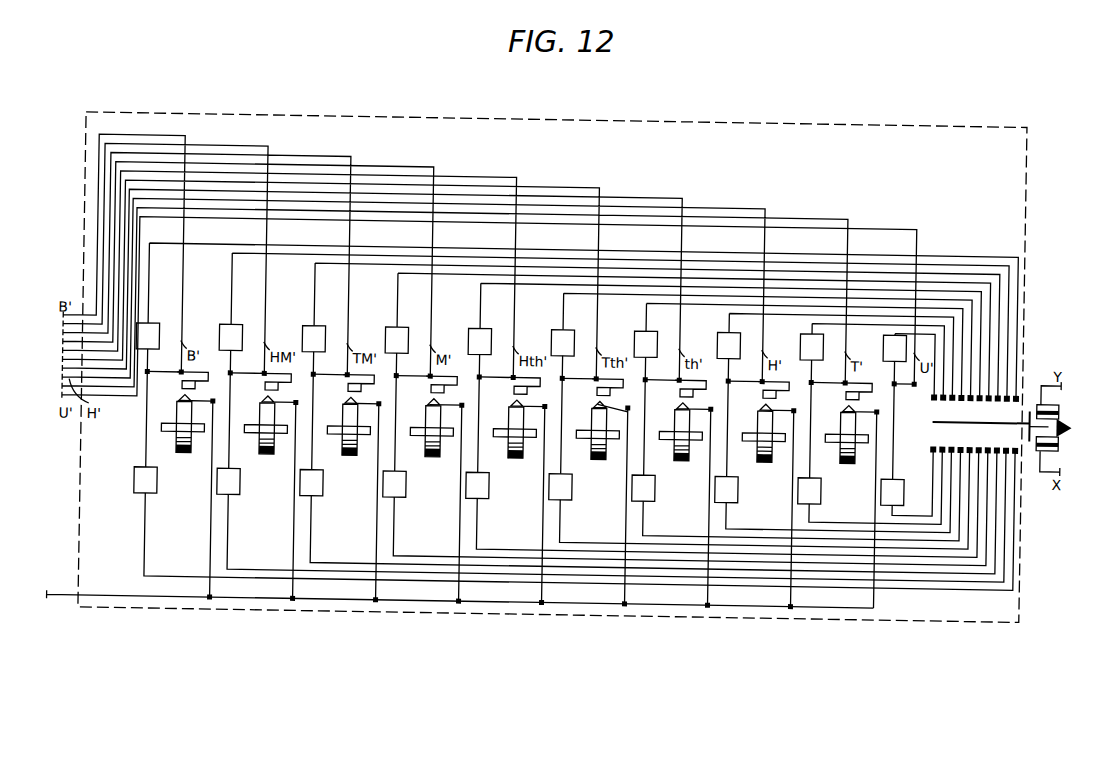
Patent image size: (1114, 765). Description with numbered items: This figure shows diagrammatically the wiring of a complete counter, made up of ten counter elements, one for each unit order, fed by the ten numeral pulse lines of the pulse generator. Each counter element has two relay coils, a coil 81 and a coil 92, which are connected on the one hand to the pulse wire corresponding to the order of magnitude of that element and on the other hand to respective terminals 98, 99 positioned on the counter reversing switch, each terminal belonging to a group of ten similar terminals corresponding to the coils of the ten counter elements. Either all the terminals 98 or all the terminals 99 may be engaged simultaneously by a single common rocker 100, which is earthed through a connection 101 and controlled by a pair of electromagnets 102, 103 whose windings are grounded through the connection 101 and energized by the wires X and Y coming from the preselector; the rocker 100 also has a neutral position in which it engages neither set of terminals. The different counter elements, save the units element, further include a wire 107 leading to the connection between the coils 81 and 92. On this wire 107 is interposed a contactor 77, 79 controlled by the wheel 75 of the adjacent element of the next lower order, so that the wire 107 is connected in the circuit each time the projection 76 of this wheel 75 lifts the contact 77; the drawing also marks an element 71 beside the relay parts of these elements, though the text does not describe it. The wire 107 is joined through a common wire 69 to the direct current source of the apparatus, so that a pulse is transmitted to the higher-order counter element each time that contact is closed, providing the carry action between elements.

The common wire 69 is at (761, 597).
The armature 71 is at (623, 437).
The wheel 75 is at (600, 458).
The projection 76 is at (592, 431).
The contact 77 is at (844, 399).
The contactor 79 is at (845, 388).
The coil 81 is at (519, 486).
The coil 92 is at (521, 342).
The terminals 98 is at (981, 436).
The terminals 99 is at (970, 389).
The rocker 100 is at (967, 430).
The connection 101 is at (1066, 420).
The electromagnet 102 is at (1049, 437).
The electromagnet 103 is at (1047, 392).
The wire 107 is at (859, 380).